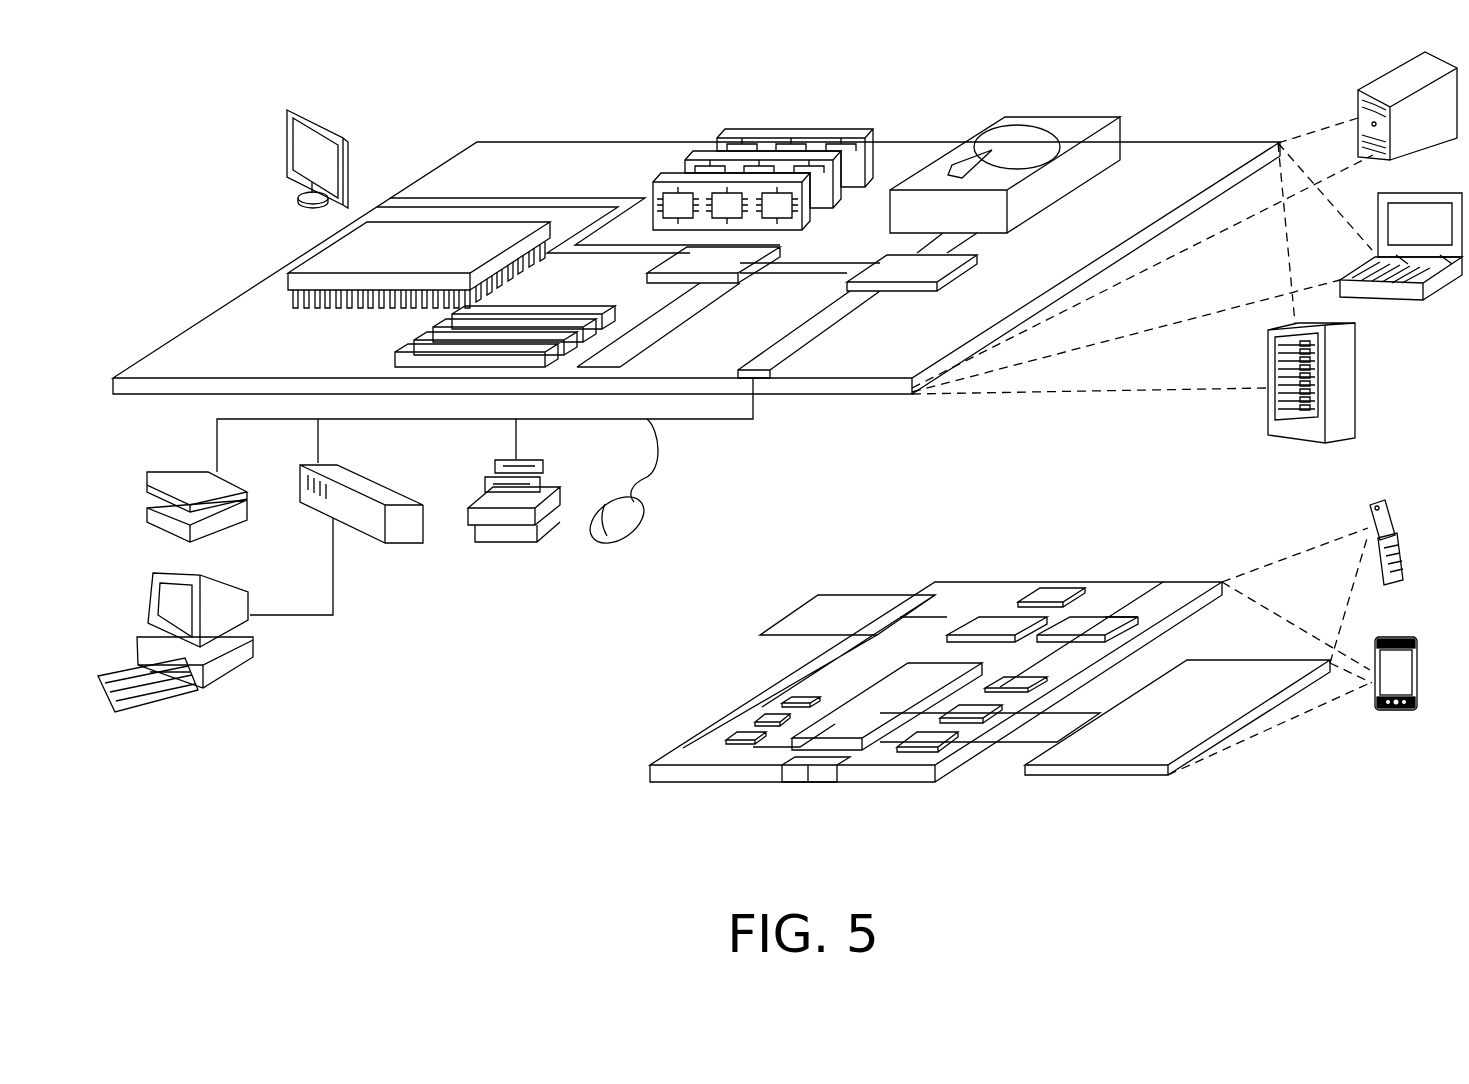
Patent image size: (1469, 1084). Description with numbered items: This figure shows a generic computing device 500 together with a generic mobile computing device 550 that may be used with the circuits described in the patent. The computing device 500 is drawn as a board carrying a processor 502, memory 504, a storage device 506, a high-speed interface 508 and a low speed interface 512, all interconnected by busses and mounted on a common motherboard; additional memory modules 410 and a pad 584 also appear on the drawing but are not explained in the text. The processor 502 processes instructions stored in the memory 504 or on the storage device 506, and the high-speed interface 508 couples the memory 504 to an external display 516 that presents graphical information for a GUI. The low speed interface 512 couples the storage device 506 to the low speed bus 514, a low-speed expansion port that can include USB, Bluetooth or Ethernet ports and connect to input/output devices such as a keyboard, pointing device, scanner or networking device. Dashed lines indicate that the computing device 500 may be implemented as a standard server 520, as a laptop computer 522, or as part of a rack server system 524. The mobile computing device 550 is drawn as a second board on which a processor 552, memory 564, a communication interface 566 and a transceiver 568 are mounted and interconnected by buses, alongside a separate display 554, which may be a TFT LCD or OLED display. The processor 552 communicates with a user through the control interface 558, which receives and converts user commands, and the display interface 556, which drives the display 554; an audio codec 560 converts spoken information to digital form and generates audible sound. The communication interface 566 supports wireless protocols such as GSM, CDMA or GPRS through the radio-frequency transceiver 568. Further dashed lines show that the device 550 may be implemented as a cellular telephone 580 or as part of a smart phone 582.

The computing device 500 is at (430, 88).
The display 516 is at (292, 110).
The processor 502 is at (313, 253).
The memory modules 410 is at (428, 337).
The memory 504 is at (800, 132).
The storage device 506 is at (1052, 113).
The high-speed interface 508 is at (727, 258).
The low speed interface 512 is at (883, 263).
The low speed bus 514 is at (760, 367).
The standard server 520 is at (1383, 83).
The laptop computer 522 is at (1440, 192).
The rack server system 524 is at (1355, 382).
The mobile computer device 550 is at (1262, 773).
The processor 552 is at (852, 712).
The display 554 is at (1220, 677).
The display interface 556 is at (937, 740).
The control interface 558 is at (978, 710).
The audio codec 560 is at (1022, 673).
The memory 564 is at (760, 717).
The communication interface 566 is at (997, 618).
The transceiver 568 is at (1097, 618).
The cellular telephone 580 is at (1053, 592).
The smart phone 582 is at (913, 595).
The pad 584 is at (825, 595).